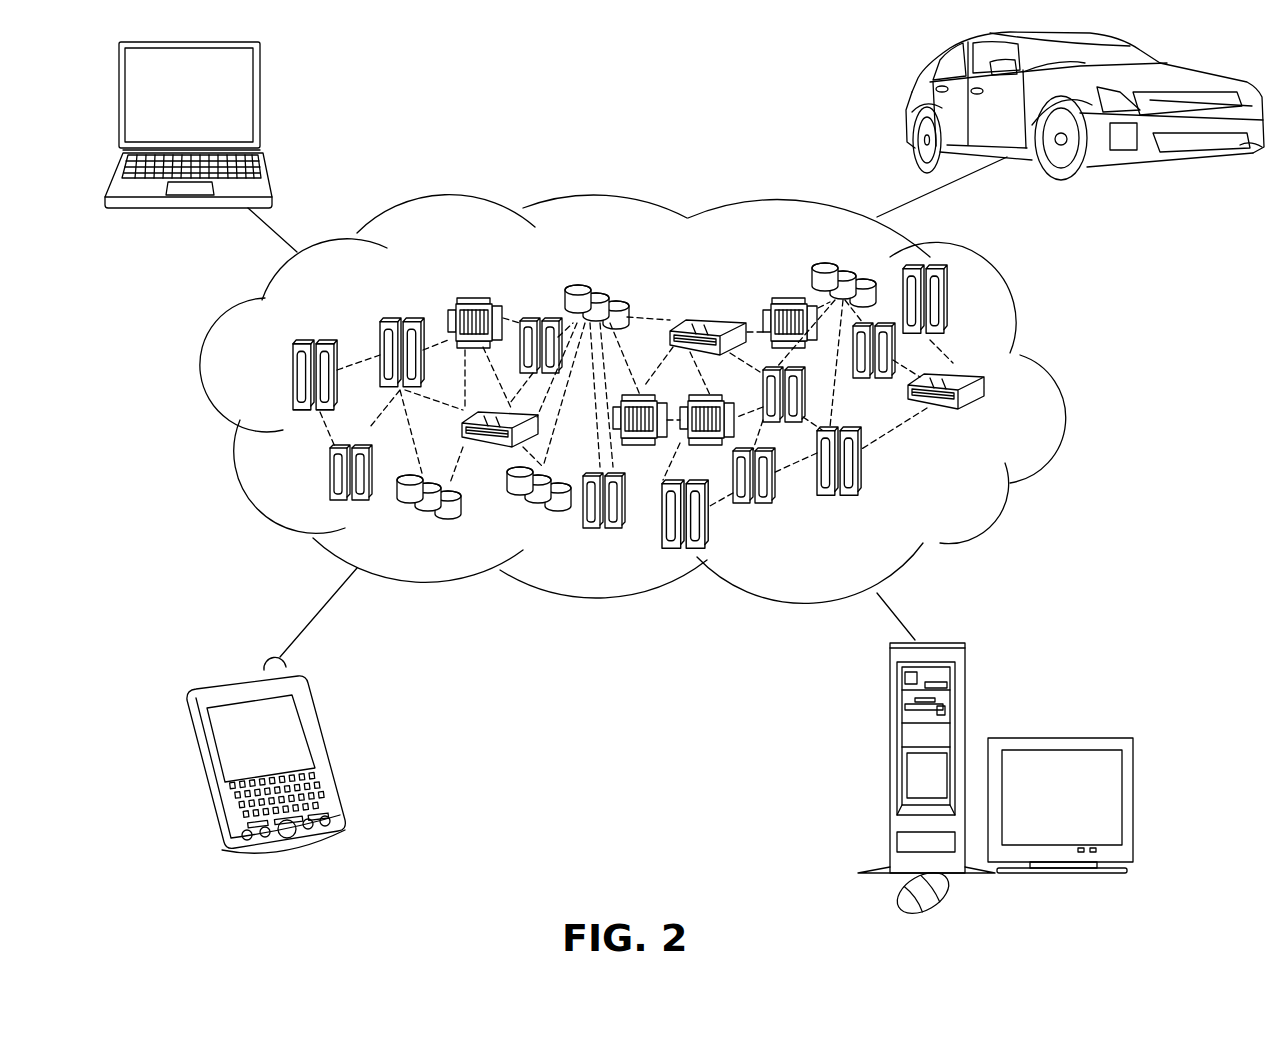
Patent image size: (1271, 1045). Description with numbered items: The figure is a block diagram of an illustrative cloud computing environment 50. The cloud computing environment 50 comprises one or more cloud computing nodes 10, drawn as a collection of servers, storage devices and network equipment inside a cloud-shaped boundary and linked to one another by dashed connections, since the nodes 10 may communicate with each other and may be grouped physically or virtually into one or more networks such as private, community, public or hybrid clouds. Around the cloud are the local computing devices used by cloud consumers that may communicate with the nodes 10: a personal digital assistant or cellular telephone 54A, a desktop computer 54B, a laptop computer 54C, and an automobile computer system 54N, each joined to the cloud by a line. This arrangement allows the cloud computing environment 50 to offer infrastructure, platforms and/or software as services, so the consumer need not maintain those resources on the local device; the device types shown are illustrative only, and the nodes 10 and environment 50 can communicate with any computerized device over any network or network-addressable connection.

The cloud computing nodes 10 is at (965, 492).
The cloud computing environment 50 is at (1055, 390).
The personal digital assistant or cellular telephone 54A is at (315, 718).
The desktop computer 54B is at (888, 702).
The laptop computer 54C is at (262, 80).
The automobile computer system 54N is at (910, 95).